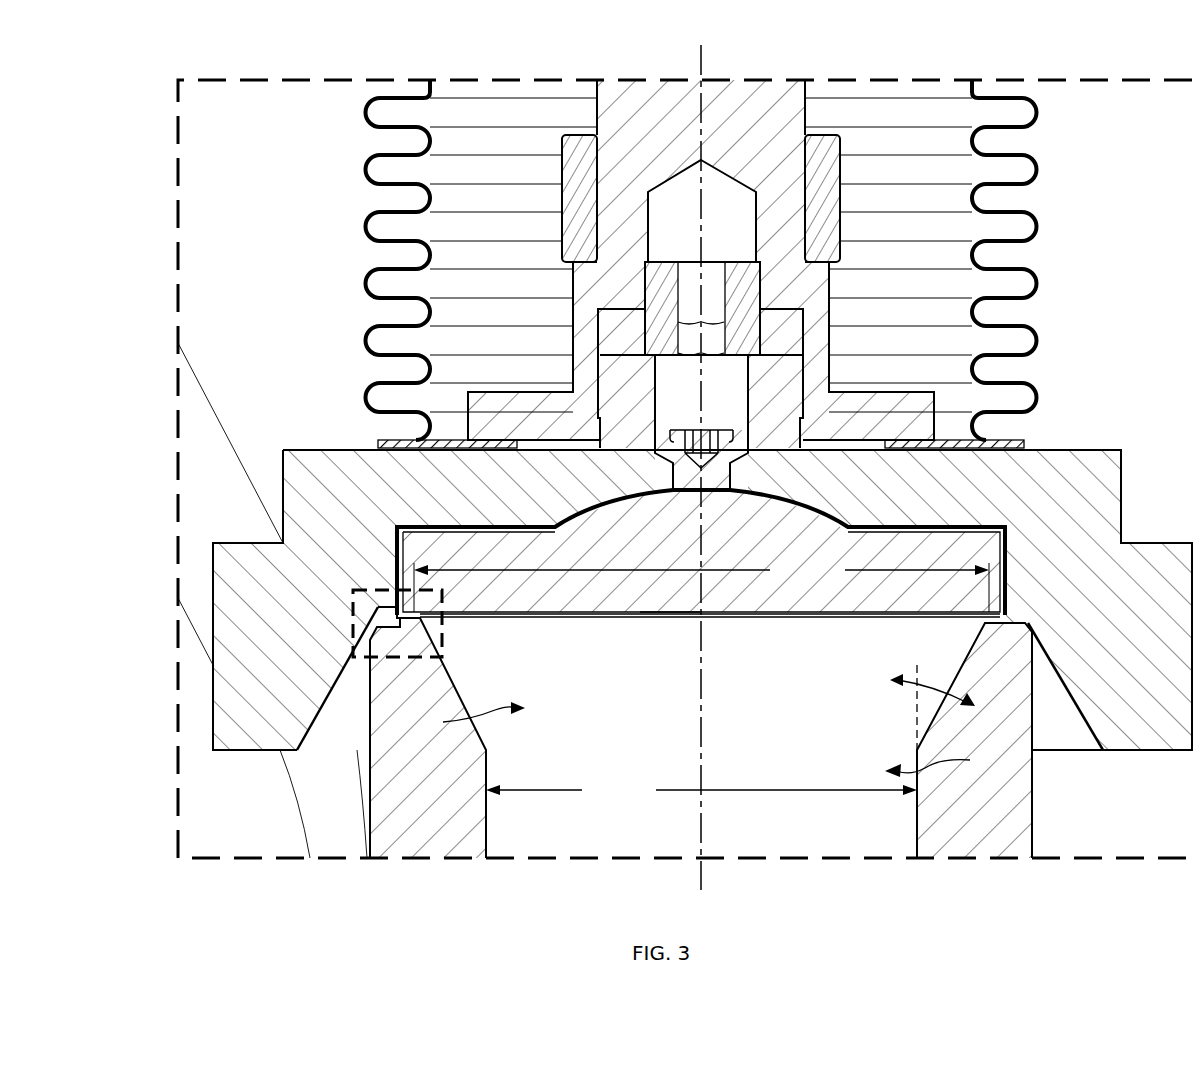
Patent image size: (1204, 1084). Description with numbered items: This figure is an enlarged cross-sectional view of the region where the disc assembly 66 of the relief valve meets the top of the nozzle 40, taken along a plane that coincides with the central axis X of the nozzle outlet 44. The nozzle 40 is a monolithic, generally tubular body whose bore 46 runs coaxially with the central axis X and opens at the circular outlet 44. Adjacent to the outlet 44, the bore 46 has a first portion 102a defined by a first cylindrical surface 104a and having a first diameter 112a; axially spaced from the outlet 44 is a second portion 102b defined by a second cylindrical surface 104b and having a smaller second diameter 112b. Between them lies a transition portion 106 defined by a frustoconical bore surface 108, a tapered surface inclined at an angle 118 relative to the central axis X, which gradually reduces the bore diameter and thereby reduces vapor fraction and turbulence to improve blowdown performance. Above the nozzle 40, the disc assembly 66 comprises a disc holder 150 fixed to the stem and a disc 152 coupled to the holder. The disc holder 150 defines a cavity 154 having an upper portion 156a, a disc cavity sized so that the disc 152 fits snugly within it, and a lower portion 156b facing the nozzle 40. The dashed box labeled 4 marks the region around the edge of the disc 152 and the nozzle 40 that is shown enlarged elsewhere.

The disc assembly 66 is at (1098, 432).
The disc holder 150 is at (318, 449).
The disc 152 is at (877, 530).
The upper portion of cavity 156a is at (992, 527).
The outlet opening of nozzle 44 is at (672, 610).
The first diameter 112a is at (701, 585).
The first portion of bore 102a is at (975, 619).
The detail view region 4 is at (352, 623).
The first cylindrical surface 104a is at (593, 624).
The angle of frustoconical bore surface 118 is at (937, 680).
The lower portion of cavity 156b is at (1046, 713).
The transition portion 106 is at (459, 719).
The frustoconical bore surface 108 is at (790, 718).
The bore 46 is at (941, 763).
The cavity 154 is at (342, 722).
The second diameter 112b is at (701, 791).
The central axis X is at (712, 808).
The nozzle 40 is at (1035, 784).
The second cylindrical surface 104b is at (572, 848).
The second portion of bore 102b is at (866, 822).